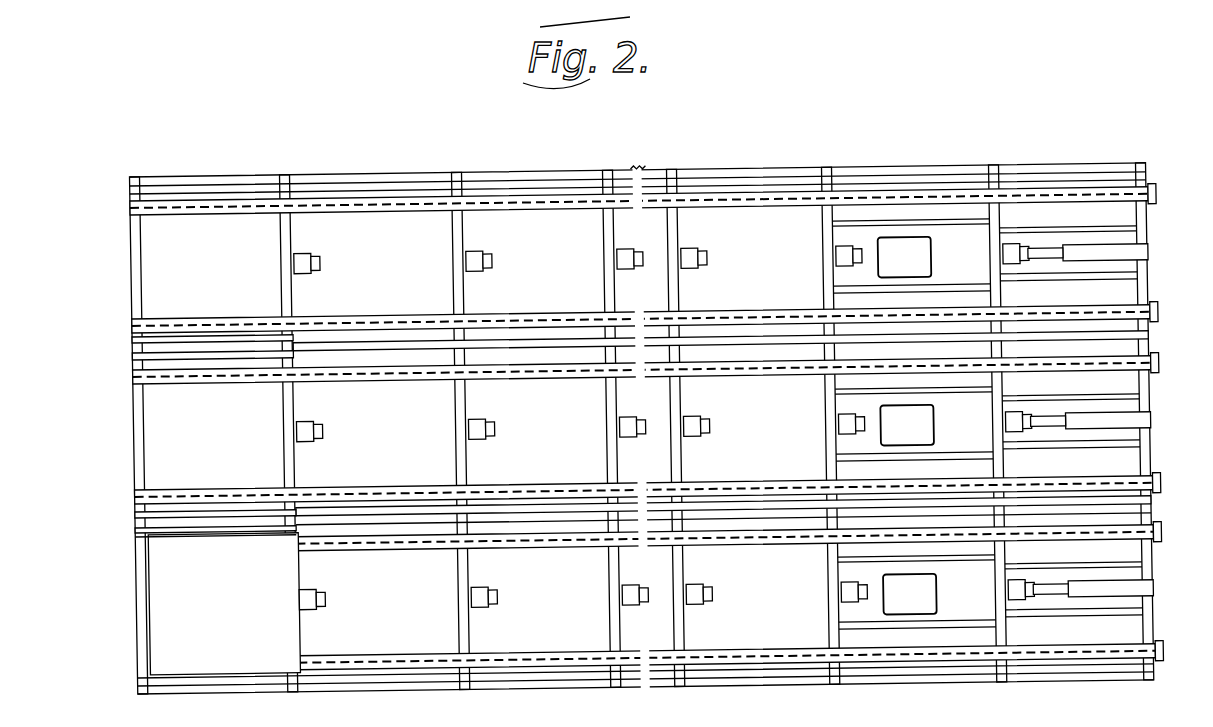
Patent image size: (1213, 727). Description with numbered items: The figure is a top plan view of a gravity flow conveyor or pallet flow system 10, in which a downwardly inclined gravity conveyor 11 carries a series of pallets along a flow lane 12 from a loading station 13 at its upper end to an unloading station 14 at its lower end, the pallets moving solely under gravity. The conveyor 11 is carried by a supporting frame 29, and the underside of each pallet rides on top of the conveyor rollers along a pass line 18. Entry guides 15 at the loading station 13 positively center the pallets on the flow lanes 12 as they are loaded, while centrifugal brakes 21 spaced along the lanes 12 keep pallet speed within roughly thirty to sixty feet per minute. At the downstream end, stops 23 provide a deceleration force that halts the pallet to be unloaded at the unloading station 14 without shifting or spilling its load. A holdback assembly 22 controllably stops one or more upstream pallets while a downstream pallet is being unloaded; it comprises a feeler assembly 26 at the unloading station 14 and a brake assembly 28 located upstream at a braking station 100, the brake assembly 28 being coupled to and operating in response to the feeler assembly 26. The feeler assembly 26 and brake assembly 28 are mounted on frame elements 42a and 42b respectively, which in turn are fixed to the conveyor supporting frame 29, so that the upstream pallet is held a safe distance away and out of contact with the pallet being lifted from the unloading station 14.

The pallet flow system 10 is at (563, 162).
The gravity conveyor 11 is at (575, 480).
The flow lane 12 is at (585, 596).
The loading station 13 is at (206, 476).
The unloading station 14 is at (1157, 243).
The entry guides 15 is at (175, 530).
The pass line 18 is at (1107, 505).
The centrifugal brakes 21 is at (708, 425).
The holdback assembly 22 is at (1130, 183).
The stops 23 is at (1157, 306).
The feeler assembly 26 is at (1065, 252).
The brake assembly 28 is at (897, 260).
The conveyor supporting frame 29 is at (674, 516).
The frame element 42a is at (1120, 224).
The frame element 42b is at (847, 226).
The braking station 100 is at (905, 212).